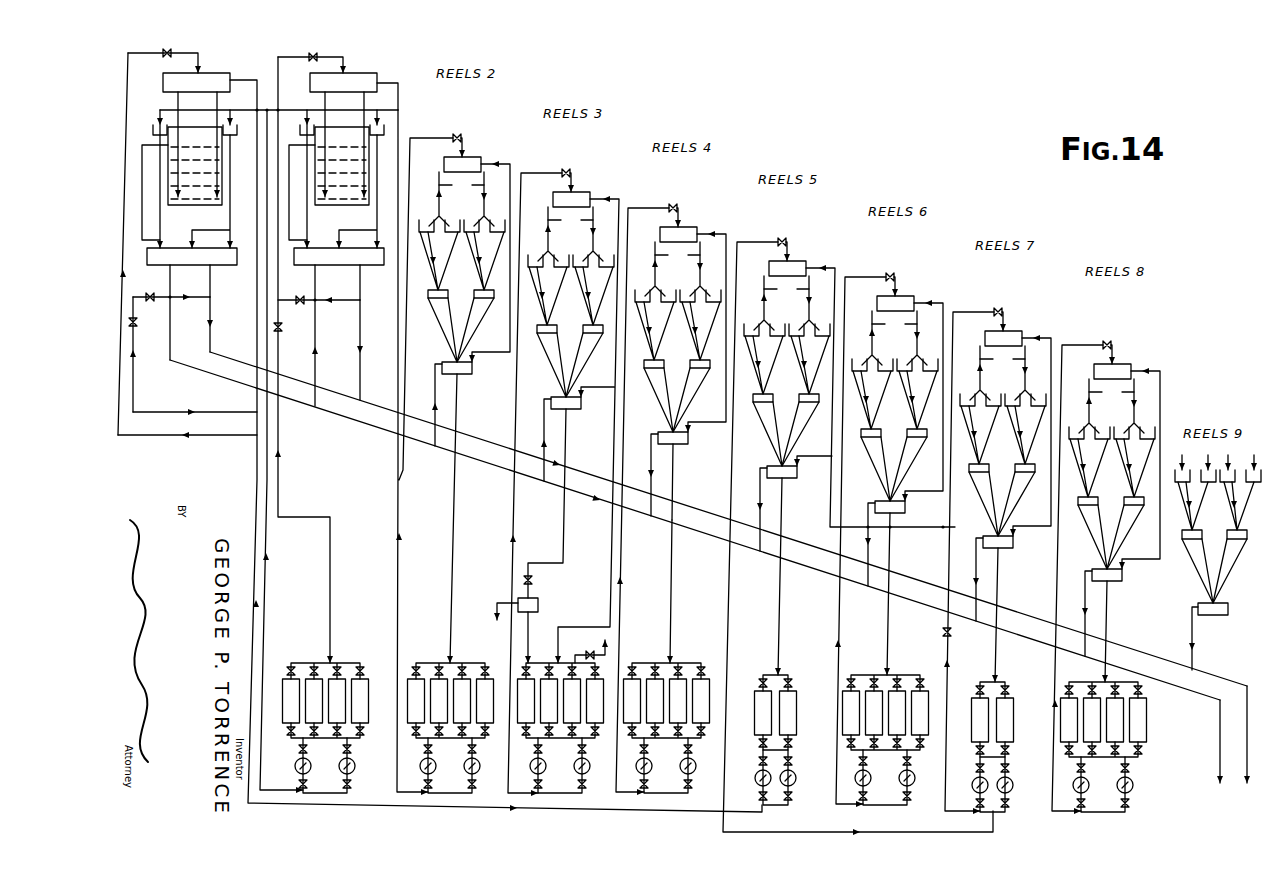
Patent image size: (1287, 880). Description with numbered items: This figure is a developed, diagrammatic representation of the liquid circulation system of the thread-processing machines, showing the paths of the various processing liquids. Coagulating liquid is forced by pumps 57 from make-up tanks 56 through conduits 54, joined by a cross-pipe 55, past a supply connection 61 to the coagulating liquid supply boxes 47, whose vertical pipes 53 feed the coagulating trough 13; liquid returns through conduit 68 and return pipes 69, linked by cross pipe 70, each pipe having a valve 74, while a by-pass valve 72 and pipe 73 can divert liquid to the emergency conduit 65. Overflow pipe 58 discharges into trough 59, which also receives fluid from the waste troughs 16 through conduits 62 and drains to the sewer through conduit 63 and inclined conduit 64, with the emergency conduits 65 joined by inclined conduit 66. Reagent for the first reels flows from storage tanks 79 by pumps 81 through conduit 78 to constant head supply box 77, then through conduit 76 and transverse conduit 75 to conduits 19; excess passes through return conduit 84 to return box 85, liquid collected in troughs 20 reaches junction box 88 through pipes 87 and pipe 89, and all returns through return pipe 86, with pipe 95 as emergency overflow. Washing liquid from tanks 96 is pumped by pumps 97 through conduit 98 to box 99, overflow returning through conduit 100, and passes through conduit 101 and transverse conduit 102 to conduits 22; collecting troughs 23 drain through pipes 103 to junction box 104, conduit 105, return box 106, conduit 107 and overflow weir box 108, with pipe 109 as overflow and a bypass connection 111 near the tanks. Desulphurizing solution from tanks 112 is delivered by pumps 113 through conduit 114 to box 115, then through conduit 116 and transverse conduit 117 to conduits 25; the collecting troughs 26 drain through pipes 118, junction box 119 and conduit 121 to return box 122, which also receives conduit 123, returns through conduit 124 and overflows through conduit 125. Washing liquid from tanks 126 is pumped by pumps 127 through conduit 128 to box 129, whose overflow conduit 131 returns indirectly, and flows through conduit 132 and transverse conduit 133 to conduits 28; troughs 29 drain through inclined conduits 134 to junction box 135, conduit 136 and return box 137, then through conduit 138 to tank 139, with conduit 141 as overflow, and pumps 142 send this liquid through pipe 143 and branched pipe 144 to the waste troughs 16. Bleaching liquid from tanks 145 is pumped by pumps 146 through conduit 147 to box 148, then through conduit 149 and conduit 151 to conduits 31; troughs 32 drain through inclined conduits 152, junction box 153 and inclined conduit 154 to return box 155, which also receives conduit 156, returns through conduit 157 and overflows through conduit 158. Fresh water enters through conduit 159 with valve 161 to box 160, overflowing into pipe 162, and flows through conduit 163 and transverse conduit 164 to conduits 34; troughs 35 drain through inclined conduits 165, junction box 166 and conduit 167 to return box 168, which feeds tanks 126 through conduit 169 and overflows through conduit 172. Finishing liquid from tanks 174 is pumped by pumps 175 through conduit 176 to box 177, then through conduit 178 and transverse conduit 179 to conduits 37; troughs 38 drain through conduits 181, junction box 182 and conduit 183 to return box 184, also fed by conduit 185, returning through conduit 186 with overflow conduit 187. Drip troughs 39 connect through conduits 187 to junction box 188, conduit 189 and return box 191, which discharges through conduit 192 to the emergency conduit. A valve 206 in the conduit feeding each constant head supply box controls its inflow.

The coagulating trough 13 is at (268, 176).
The waste troughs 16 is at (152, 130).
The conduits 19 is at (475, 218).
The troughs 20 is at (462, 261).
The conduits 22 is at (584, 252).
The collecting troughs 23 is at (571, 296).
The longitudinal conduits 25 is at (692, 290).
The cyclone separator 26 is at (678, 331).
The conduits 28 is at (801, 322).
The collecting troughs 29 is at (787, 365).
The conduits 31 is at (909, 358).
The bleaching liquid collecting troughs 32 is at (895, 400).
The longitudinal reel supply conduits 34 is at (1014, 394).
The collecting troughs 35 is at (1003, 435).
The longitudinal conduits 37 is at (1122, 426).
The troughs 38 is at (1112, 468).
The troughs 39 is at (1218, 478).
The coagulating liquid supply box 47 is at (208, 75).
The vertical pipe 53 is at (271, 144).
The conduit 54 is at (167, 53).
The cross-pipe 55 is at (221, 440).
The supply or make-up tanks 56 is at (357, 682).
The pumps 57 is at (325, 765).
The overflow pipe 58 is at (258, 80).
The trough 59 is at (183, 268).
The supply line 61 is at (165, 56).
The conduits 62 is at (261, 179).
The conduit 63 is at (168, 349).
The inclined conduit 64 is at (352, 432).
The overflow emergency conduit 65 is at (212, 338).
The inclined conduit 66 is at (488, 440).
The common conduit 68 is at (224, 192).
The vertical return pipe 69 is at (133, 386).
The cross pipe 70 is at (224, 412).
The by-pass valve 72 is at (246, 289).
The pipe 73 is at (205, 303).
The valve 74 is at (138, 322).
The transverse conduit 75 is at (438, 212).
The conduit 76 is at (461, 184).
The constant head supply box 77 is at (475, 162).
The conduit 78 is at (432, 138).
The storage tanks 79 is at (462, 682).
The circulating pumps 81 is at (450, 765).
The return conduit 84 is at (512, 162).
The return box 85 is at (465, 375).
The return pipe 86 is at (453, 563).
The pipes 87 is at (480, 283).
The junction box 88 is at (461, 330).
The pipe 89 is at (445, 343).
The pipe 95 is at (433, 395).
The storage tanks 96 is at (534, 680).
The pumps 97 is at (560, 765).
The conduit 98 is at (526, 171).
The constant head supply box 99 is at (588, 196).
The conduit 100 is at (621, 202).
The conduit 101 is at (570, 220).
The transverse conduit 102 is at (545, 250).
The pipes 103 is at (598, 314).
The junction box 104 is at (570, 365).
The conduit 105 is at (560, 380).
The main return box 106 is at (579, 404).
The conduit 107 is at (566, 438).
The overflow weir box 108 is at (540, 606).
The pipe 109 is at (544, 435).
The bypass valve 111 is at (590, 650).
The storage and make-up tanks 112 is at (680, 685).
The pumps 113 is at (666, 765).
The conduit 114 is at (664, 206).
The constant head supply box 115 is at (696, 228).
The conduit 116 is at (677, 255).
The transverse conduit 117 is at (655, 285).
The pipes 118 is at (705, 348).
The junction box 119 is at (680, 400).
The conduit 121 is at (668, 408).
The main return box 122 is at (682, 448).
The conduit 123 is at (728, 236).
The conduit 124 is at (672, 566).
The conduit 125 is at (651, 470).
The make-up storage tanks 126 is at (1008, 700).
The pumps 127 is at (965, 788).
The conduit 128 is at (745, 240).
The constant head supply box 129 is at (800, 262).
The conduit 131 is at (838, 265).
The conduit 132 is at (786, 288).
The transverse conduit 133 is at (764, 318).
The inclined conduits 134 is at (815, 384).
The junction box 135 is at (789, 434).
The conduit 136 is at (778, 448).
The main return box 137 is at (790, 480).
The conduit 138 is at (781, 573).
The tank 139 is at (792, 698).
The conduit 141 is at (760, 486).
The pumps 142 is at (757, 777).
The pipe 143 is at (255, 459).
The branched pipe 144 is at (308, 110).
The make-up and storage tanks 145 is at (900, 698).
The pumps 146 is at (885, 777).
The conduit 147 is at (849, 276).
The constant head supply box 148 is at (910, 296).
The conduit 149 is at (894, 323).
The conduit 151 is at (872, 355).
The inclined conduits 152 is at (920, 422).
The junction box 153 is at (896, 469).
The inclined conduit 154 is at (885, 483).
The main return box 155 is at (905, 509).
The conduit 156 is at (944, 312).
The conduit 157 is at (889, 621).
The conduit 158 is at (868, 540).
The conduit 159 is at (960, 310).
The constant head supply box 160 is at (1018, 331).
The valve 161 is at (951, 632).
The pipe 162 is at (1052, 320).
The conduit 163 is at (1002, 358).
The transverse conduit 164 is at (980, 392).
The inclined conduits 165 is at (1022, 455).
The junction box 166 is at (999, 504).
The conduit 167 is at (995, 515).
The main return box 168 is at (1008, 551).
The conduit 169 is at (998, 598).
The conduit 172 is at (976, 568).
The storage and make-up tanks 174 is at (1080, 700).
The pumps 175 is at (1103, 784).
The conduit 176 is at (1080, 344).
The constant head supply box 177 is at (1120, 366).
The conduit 178 is at (1111, 391).
The transverse conduit 179 is at (1089, 427).
The conduits 181 is at (1132, 489).
The junction box 182 is at (1108, 537).
The conduit 183 is at (1102, 548).
The main return box 184 is at (1122, 580).
The conduit 185 is at (1161, 370).
The conduit 186 is at (1107, 606).
The conduit 187 is at (1085, 595).
The junction box 188 is at (1214, 566).
The conduit 189 is at (1215, 582).
The return box 191 is at (1228, 610).
The conduit 192 is at (1195, 658).
The valve 206 is at (460, 134).